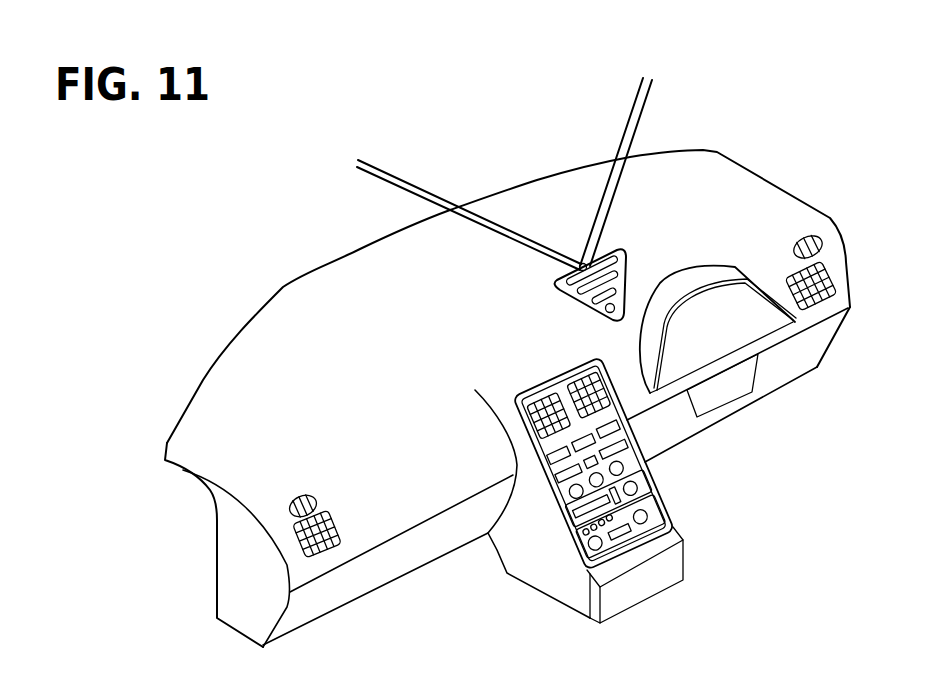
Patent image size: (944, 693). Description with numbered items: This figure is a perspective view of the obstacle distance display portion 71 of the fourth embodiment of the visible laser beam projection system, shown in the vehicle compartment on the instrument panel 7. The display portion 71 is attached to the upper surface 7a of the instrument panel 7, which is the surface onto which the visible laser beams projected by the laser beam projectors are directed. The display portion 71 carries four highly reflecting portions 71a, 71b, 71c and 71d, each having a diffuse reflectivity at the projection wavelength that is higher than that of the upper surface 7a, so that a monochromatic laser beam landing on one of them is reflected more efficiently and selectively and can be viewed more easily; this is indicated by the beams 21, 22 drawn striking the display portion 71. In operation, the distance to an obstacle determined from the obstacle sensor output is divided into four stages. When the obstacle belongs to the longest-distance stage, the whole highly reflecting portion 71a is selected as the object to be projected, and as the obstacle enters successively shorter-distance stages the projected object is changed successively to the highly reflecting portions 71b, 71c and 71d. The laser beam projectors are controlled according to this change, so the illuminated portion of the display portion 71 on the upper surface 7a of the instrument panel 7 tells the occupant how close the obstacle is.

The instrument panel 7 is at (240, 335).
The upper surface of the instrument panel 7a is at (340, 295).
The beam 21 is at (425, 188).
The beam 22 is at (627, 130).
The obstacle distance display portion 71 is at (625, 280).
The highly reflecting portion 71a is at (607, 255).
The highly reflecting portion 71b is at (573, 297).
The highly reflecting portion 71c is at (624, 298).
The highly reflecting portion 71d is at (600, 321).